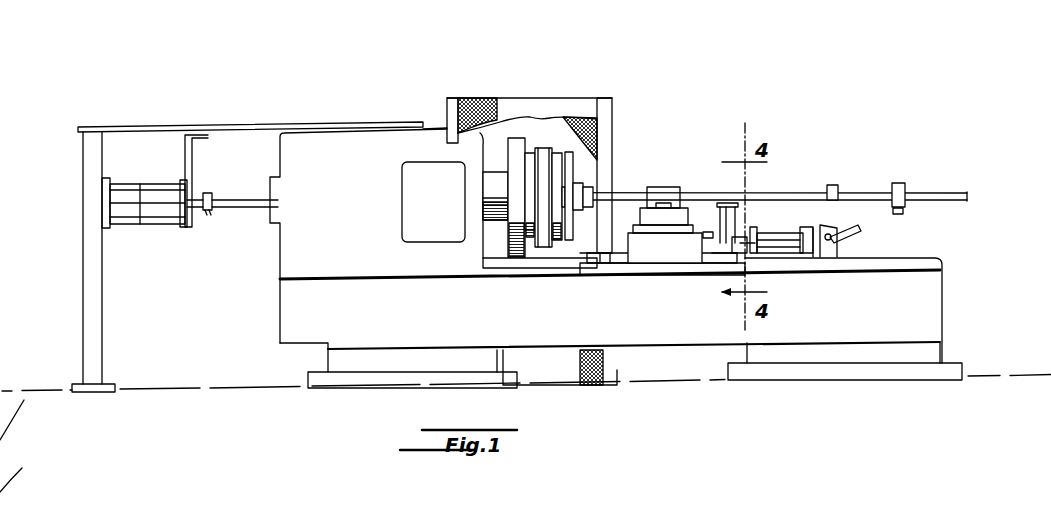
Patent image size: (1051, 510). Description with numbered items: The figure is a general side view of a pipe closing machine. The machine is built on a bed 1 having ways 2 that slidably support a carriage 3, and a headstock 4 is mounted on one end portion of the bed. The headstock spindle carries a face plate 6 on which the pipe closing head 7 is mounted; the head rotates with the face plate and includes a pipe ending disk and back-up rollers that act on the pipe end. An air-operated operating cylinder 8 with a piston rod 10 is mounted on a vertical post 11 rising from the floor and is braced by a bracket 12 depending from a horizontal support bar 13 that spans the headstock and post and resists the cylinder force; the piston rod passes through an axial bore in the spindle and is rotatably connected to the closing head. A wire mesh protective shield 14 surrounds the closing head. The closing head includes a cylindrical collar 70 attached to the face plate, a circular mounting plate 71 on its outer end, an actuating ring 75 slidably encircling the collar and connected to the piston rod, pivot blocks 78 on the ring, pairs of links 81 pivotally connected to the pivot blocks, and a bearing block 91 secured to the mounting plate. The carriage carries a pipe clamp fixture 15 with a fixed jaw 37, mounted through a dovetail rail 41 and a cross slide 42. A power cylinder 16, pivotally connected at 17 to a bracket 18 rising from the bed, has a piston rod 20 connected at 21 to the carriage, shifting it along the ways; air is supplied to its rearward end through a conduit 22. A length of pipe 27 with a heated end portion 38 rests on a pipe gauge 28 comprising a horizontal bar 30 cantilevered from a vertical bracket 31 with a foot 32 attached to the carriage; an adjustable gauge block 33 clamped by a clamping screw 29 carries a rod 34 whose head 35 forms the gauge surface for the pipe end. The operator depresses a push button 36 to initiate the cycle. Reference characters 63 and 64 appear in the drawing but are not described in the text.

The bed 1 is at (945, 310).
The ways 2 is at (933, 257).
The carriage 3 is at (657, 272).
The headstock 4 is at (338, 131).
The face plate 6 is at (518, 138).
The pipe closing head 7 is at (548, 146).
The operating cylinder 8 is at (148, 224).
The piston rod 10 is at (248, 205).
The vertical post 11 is at (90, 270).
The bracket 12 is at (190, 152).
The horizontal support bar 13 is at (207, 126).
The protective shield 14 is at (540, 100).
The pipe clamp fixture 15 is at (667, 185).
The power cylinder 16 is at (788, 235).
The pivotal connection 17 is at (830, 233).
The bracket 18 is at (830, 255).
The piston rod 20 is at (753, 247).
The connection 21 is at (735, 240).
The conduit 22 is at (857, 237).
The length of pipe 27 is at (687, 190).
The pipe gauge 28 is at (968, 194).
The clamping screw 29 is at (903, 212).
The horizontal bar 30 is at (950, 193).
The vertical bracket 31 is at (727, 203).
The foot 32 is at (728, 258).
The gauge block 33 is at (897, 183).
The rod 34 is at (847, 190).
The head 35 is at (833, 185).
The push button 36 is at (708, 233).
The fixed jaw 37 is at (655, 190).
The heated end portion 38 is at (603, 187).
The dovetail rail 41 is at (630, 255).
The cross slide 42 is at (677, 243).
The key 63 is at (205, 213).
The coupling 64 is at (205, 193).
The cylindrical collar 70 is at (523, 257).
The circular mounting plate 71 is at (563, 240).
The actuating ring 75 is at (556, 242).
The pivot blocks 78 is at (548, 247).
The links 81 is at (562, 160).
The bearing block 91 is at (593, 240).